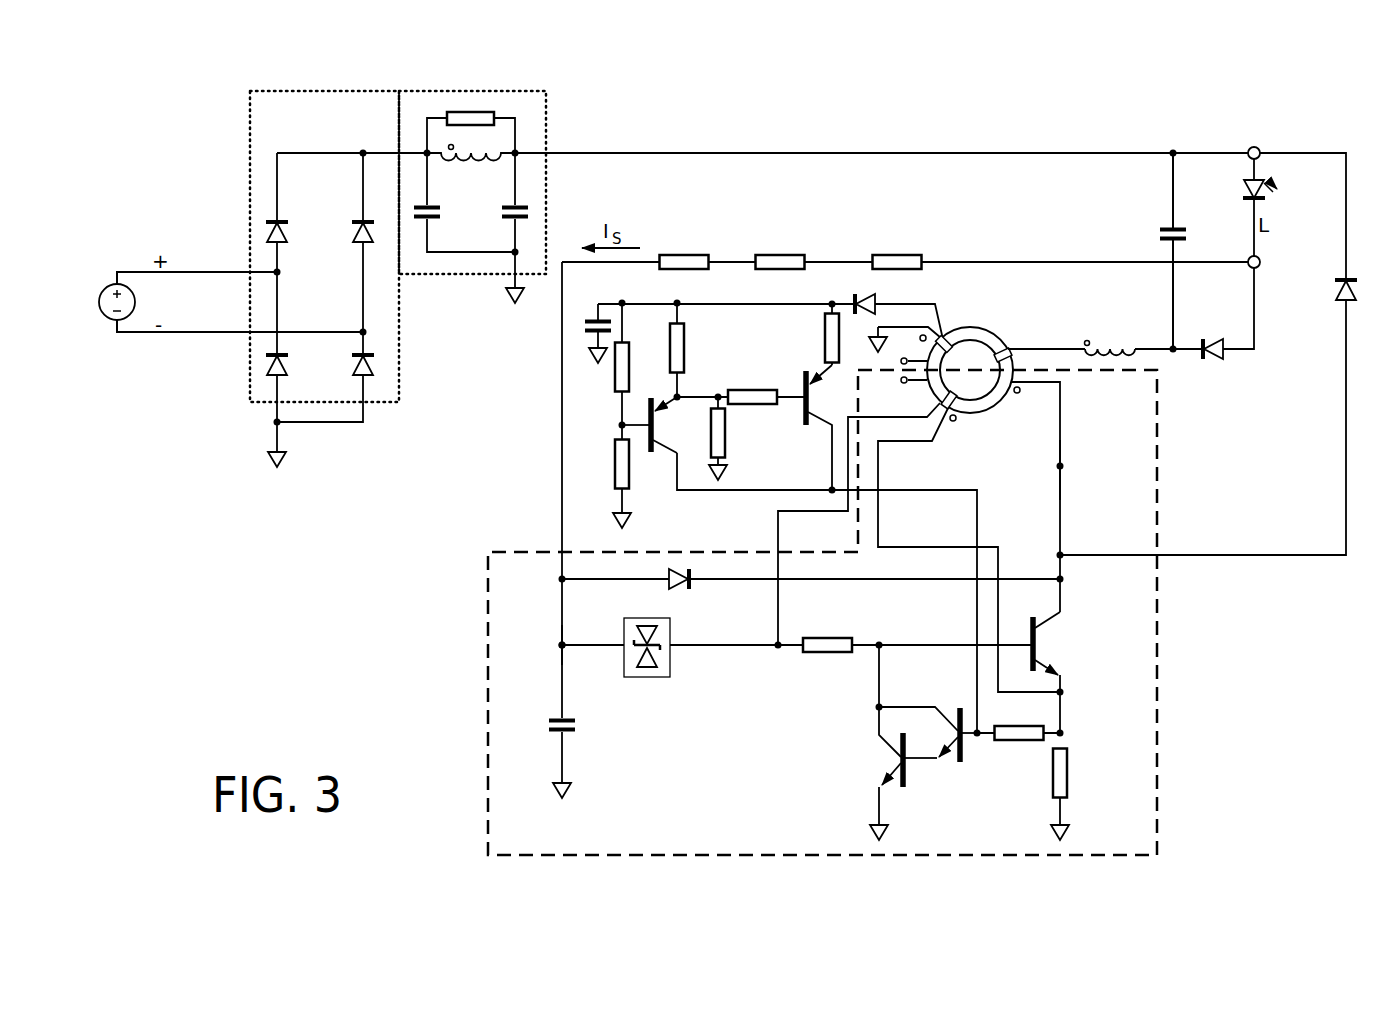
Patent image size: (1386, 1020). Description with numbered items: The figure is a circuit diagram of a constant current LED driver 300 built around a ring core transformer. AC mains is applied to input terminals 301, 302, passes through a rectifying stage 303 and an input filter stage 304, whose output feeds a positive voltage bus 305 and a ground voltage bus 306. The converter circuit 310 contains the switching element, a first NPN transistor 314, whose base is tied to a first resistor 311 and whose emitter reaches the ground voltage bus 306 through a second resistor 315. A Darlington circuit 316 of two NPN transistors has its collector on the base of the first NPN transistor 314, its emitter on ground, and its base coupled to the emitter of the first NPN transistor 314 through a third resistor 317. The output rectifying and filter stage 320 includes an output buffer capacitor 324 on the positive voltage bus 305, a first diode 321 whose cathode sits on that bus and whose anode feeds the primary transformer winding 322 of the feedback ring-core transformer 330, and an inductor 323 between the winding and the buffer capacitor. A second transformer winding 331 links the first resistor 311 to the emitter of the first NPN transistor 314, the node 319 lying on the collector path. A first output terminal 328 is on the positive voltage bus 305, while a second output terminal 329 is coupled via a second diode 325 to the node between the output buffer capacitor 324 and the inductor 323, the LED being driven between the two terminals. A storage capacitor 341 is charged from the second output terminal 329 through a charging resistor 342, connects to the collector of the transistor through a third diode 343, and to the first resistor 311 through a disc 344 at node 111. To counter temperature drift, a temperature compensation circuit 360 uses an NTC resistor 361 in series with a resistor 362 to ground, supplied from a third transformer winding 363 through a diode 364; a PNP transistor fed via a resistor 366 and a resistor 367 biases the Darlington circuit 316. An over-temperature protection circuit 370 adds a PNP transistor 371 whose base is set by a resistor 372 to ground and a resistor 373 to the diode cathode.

The node 111 is at (543, 645).
The constant current LED driver 300 is at (383, 587).
The input terminal 301 is at (197, 264).
The input terminal 302 is at (240, 342).
The rectifying stage 303 is at (250, 112).
The input filter stage 304 is at (546, 116).
The positive voltage bus 305 is at (692, 153).
The ground voltage bus 306 is at (513, 311).
The converter circuit 310 is at (1158, 718).
The first resistor 311 is at (827, 631).
The first NPN transistor 314 is at (1060, 643).
The second resistor 315 is at (1078, 795).
The Darlington circuit 316 is at (926, 776).
The third resistor 317 is at (1019, 721).
The node 319 is at (1062, 466).
The output rectifying and filter stage 320 is at (1100, 140).
The first diode 321 is at (1333, 305).
The primary transformer winding 322 is at (1007, 350).
The inductor 323 is at (1110, 336).
The output buffer capacitor 324 is at (1154, 251).
The second diode 325 is at (1213, 334).
The first output terminal 328 is at (1254, 139).
The second output terminal 329 is at (1274, 263).
The feedback ring-core transformer 330 is at (995, 325).
The second transformer winding 331 is at (955, 405).
The storage capacitor 341 is at (581, 755).
The charging resistor 342 is at (762, 245).
The third diode 343 is at (699, 588).
The disc 344 is at (647, 661).
The temperature compensation circuit 360 is at (670, 487).
The NTC resistor 361 is at (696, 348).
The resistor 362 is at (737, 433).
The third transformer winding 363 is at (950, 335).
The diode 364 is at (884, 296).
The resistor 366 is at (813, 402).
The resistor 367 is at (752, 384).
The over-temperature protection circuit 370 is at (600, 425).
The PNP transistor 371 is at (675, 425).
The resistor 372 is at (603, 464).
The resistor 373 is at (637, 356).